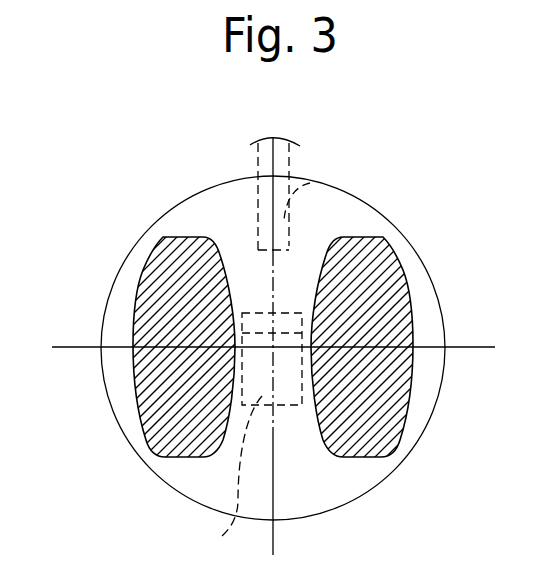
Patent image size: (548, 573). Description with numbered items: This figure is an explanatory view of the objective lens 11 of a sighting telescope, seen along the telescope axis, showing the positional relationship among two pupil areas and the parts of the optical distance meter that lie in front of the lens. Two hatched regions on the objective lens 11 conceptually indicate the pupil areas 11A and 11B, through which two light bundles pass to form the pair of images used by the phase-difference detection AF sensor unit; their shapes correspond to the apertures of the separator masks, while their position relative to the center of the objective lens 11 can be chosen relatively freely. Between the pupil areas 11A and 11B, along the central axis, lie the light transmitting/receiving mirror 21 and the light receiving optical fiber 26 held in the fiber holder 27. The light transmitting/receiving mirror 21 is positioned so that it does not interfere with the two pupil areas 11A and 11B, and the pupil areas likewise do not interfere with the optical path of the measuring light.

The objective lens 11 is at (357, 210).
The pupil area 11A is at (148, 326).
The pupil area 11B is at (400, 321).
The light receiving optical fiber 26 is at (317, 182).
The fiber holder 27 is at (312, 183).
The light transmitting/receiving mirror 21 is at (215, 540).